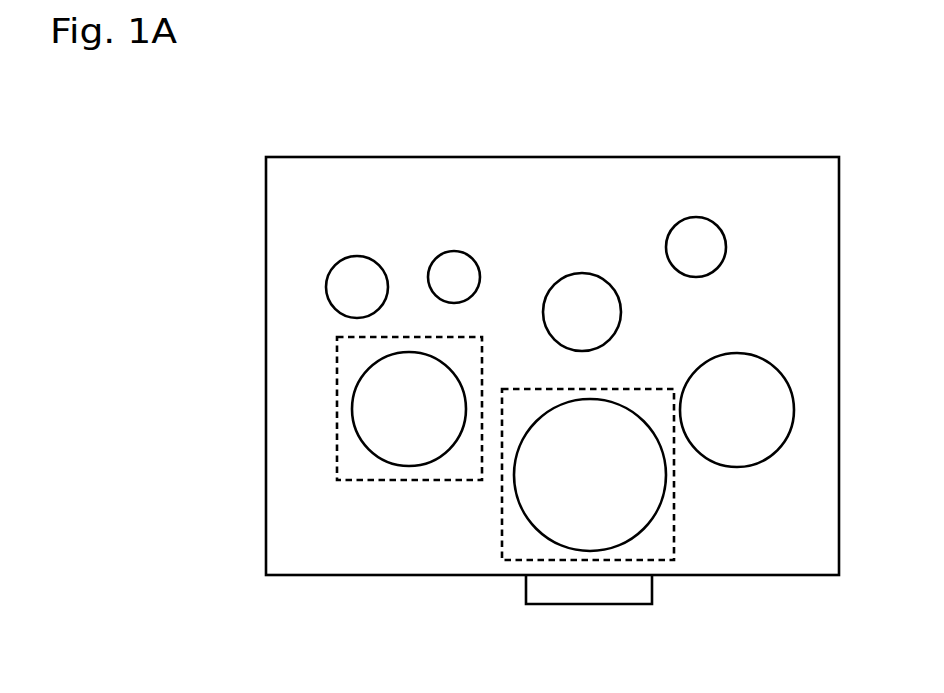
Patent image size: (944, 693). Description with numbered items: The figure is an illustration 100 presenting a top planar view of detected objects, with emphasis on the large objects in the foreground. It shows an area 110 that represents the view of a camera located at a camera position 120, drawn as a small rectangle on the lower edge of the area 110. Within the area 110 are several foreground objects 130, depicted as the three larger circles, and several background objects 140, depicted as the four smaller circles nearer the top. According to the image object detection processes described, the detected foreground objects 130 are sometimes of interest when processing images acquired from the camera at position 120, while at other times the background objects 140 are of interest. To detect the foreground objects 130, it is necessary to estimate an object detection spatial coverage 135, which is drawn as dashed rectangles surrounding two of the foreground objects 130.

The illustration 100 is at (263, 90).
The area 110 is at (768, 157).
The camera position 120 is at (583, 604).
The foreground objects 130 is at (573, 451).
The object detection spatial coverage 135 is at (410, 480).
The background objects 140 is at (358, 256).